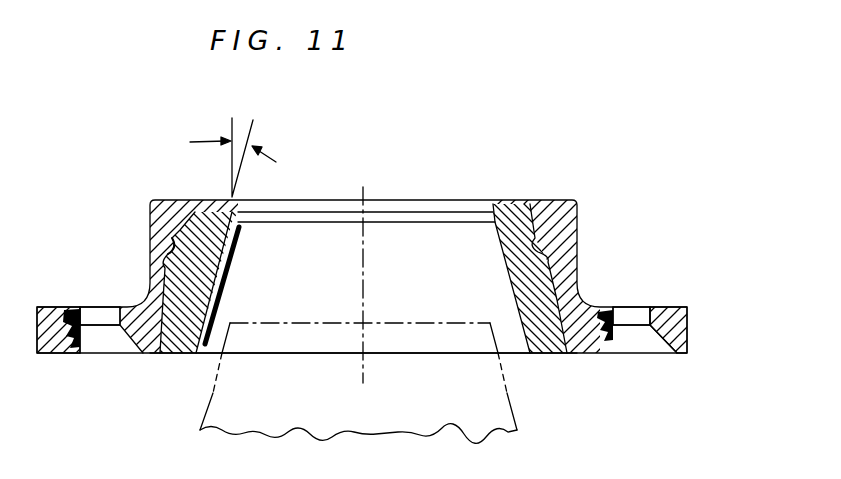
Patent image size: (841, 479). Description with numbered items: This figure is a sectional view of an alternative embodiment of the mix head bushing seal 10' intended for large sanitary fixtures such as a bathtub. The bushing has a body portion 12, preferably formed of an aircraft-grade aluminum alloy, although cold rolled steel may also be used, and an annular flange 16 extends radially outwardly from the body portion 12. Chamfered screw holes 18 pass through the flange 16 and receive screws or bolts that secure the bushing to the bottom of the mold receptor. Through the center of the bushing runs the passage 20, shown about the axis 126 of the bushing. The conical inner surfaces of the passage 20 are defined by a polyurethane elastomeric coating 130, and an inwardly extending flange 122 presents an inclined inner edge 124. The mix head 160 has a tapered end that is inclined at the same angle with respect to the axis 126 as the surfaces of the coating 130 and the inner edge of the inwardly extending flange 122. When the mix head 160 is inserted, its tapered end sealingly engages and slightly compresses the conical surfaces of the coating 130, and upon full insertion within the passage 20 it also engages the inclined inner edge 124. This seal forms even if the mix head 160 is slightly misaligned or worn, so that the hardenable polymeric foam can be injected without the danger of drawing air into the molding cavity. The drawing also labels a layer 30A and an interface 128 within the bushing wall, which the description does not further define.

The mix head bushing seal 10' is at (394, 277).
The body portion 12 is at (173, 355).
The annular flange 16 is at (687, 316).
The chamfered screw holes 18 is at (83, 309).
The passage 20 is at (434, 285).
The top coating layer 30A is at (403, 213).
The inwardly extending flange 122 is at (528, 200).
The inclined inner edge 124 is at (478, 200).
The axis 126 is at (357, 237).
The bond interface 128 is at (158, 244).
The polyurethane elastomeric coating 130 is at (220, 282).
The mix head 160 is at (503, 387).